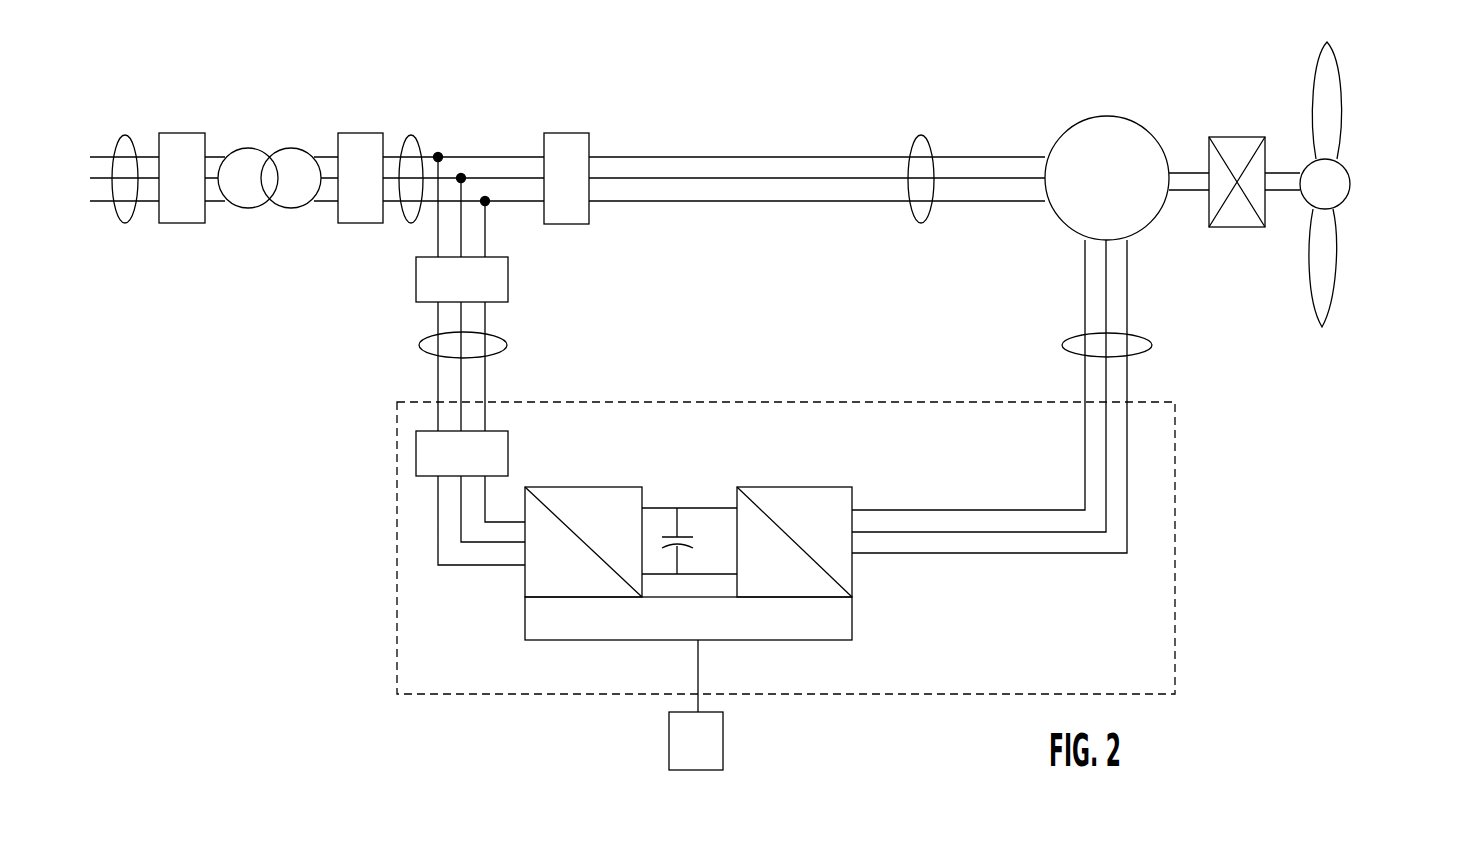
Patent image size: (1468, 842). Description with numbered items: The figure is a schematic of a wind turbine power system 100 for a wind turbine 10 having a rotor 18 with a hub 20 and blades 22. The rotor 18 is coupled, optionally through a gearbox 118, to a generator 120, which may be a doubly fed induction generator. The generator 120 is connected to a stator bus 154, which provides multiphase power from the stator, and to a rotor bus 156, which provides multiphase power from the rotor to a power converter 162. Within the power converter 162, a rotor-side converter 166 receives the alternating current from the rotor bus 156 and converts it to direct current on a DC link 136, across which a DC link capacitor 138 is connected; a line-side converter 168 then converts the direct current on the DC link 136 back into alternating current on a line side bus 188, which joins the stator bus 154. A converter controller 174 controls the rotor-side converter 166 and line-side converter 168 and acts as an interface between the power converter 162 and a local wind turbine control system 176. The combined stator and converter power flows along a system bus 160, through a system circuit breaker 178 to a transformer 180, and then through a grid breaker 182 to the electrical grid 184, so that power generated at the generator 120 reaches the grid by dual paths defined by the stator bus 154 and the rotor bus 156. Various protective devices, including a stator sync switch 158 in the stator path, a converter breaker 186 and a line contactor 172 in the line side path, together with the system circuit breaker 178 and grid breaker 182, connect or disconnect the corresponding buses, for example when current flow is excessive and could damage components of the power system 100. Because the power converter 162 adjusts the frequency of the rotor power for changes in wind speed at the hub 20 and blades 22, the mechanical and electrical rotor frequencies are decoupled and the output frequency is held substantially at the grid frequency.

The wind turbine 10 is at (1253, 180).
The rotor 18 is at (1367, 196).
The hub 20 is at (1350, 182).
The blades 22 is at (1330, 113).
The wind turbine power system 100 is at (350, 600).
The gearbox 118 is at (1237, 137).
The generator 120 is at (1107, 113).
The DC link 136 is at (683, 508).
The DC link capacitor 138 is at (672, 537).
The stator bus 154 is at (921, 135).
The rotor bus 156 is at (1152, 340).
The stator sync switch 158 is at (565, 133).
The system bus 160 is at (411, 137).
The power converter 162 is at (1175, 480).
The rotor-side converter 166 is at (852, 578).
The line-side converter 168 is at (525, 585).
The line contactor 172 is at (416, 460).
The converter controller 174 is at (575, 640).
The local wind turbine control system 176 is at (723, 752).
The system circuit breaker 178 is at (358, 133).
The transformer 180 is at (291, 150).
The grid breaker 182 is at (190, 133).
The electrical grid 184 is at (125, 135).
The converter breaker 186 is at (416, 278).
The line side bus 188 is at (419, 345).